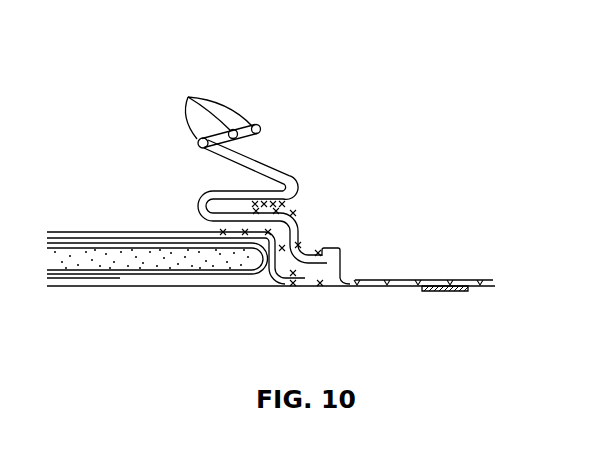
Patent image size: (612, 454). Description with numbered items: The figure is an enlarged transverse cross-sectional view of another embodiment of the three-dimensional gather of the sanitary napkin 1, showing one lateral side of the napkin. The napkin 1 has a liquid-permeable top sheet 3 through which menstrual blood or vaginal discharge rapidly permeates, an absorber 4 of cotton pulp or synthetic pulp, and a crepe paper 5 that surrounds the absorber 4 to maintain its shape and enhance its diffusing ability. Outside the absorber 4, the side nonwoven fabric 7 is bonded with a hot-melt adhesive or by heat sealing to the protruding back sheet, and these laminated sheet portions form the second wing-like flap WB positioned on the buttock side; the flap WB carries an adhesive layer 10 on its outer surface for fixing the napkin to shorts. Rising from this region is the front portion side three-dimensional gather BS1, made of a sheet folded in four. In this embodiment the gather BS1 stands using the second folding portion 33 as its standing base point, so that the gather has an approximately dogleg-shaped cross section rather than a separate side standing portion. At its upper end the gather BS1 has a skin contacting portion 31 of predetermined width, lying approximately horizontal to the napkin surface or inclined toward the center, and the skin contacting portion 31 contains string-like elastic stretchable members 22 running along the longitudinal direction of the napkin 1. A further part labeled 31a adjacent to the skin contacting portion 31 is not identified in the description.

The sanitary napkin 1 is at (150, 148).
The liquid-permeable top sheet 3 is at (110, 237).
The absorber 4 is at (53, 257).
The crepe paper 5 is at (129, 246).
The side nonwoven fabric 7 is at (333, 247).
The adhesive layer 10 is at (428, 292).
The string-like elastic stretchable member 22 is at (214, 104).
The skin contacting portion 31 is at (232, 143).
The roller 31a is at (262, 124).
The second folding portion 33 is at (297, 190).
The front portion side three-dimensional gather BS1 is at (243, 110).
The second wing-like flap WB is at (412, 278).